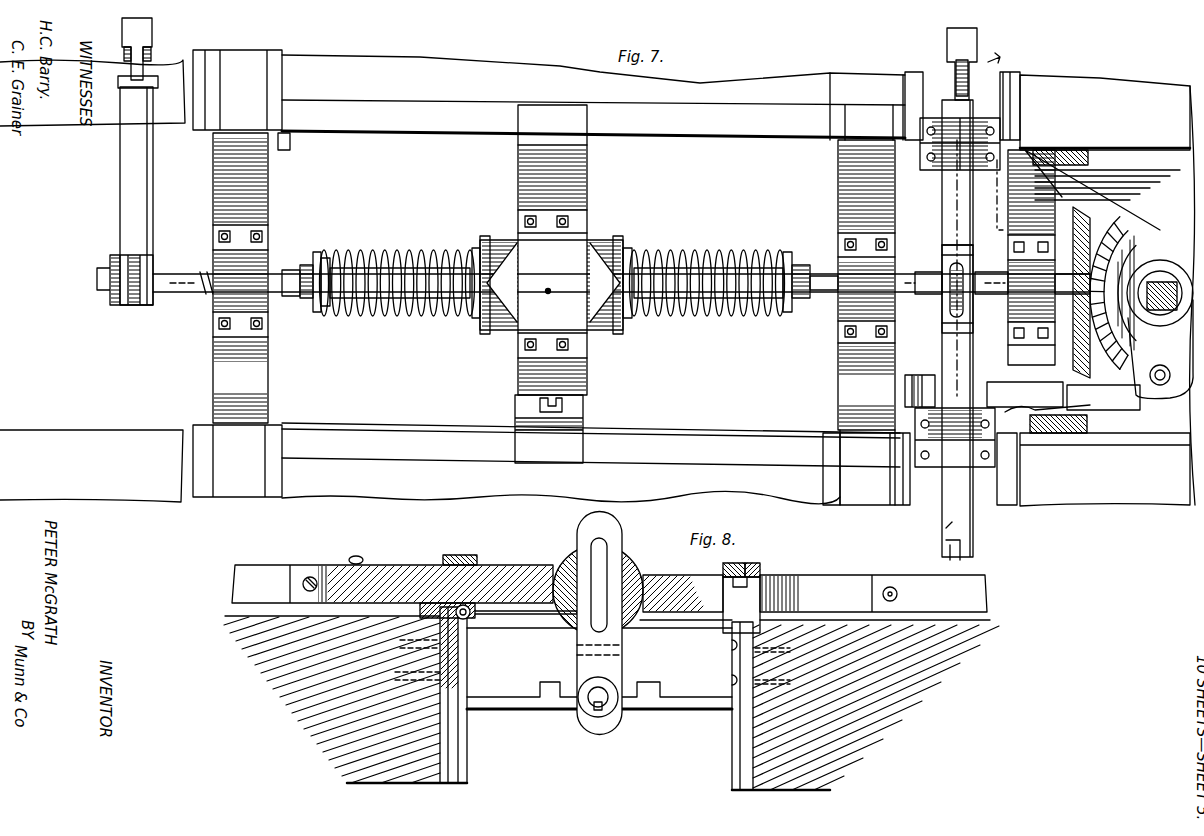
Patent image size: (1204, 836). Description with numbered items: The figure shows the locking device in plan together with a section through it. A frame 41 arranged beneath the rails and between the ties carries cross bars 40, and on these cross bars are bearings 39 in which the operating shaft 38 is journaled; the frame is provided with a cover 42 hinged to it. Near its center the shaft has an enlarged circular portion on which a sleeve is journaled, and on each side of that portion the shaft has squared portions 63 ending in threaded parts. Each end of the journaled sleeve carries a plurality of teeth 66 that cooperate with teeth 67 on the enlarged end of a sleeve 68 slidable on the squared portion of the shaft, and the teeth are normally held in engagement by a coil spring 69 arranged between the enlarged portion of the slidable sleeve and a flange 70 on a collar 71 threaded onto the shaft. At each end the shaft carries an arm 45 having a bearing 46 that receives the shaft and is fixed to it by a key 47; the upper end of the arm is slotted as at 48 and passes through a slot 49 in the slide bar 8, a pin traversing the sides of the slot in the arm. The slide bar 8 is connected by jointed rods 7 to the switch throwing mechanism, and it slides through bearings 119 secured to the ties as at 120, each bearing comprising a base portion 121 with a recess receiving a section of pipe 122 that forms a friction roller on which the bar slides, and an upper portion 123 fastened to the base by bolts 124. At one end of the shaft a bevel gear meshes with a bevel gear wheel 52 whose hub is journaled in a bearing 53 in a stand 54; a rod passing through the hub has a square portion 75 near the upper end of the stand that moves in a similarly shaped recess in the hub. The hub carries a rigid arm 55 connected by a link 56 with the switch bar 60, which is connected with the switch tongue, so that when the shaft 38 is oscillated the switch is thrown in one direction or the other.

In FIG. 7, the jointed rods 7 is at (152, 33).
In FIG. 8, the jointed rods 7 is at (609, 588).
In FIG. 7, the slide bar 8 is at (155, 86).
In FIG. 8, the slide bar 8 is at (821, 598).
In FIG. 7, the frame 41 is at (470, 125).
In FIG. 7, the cross bars 40 is at (262, 376).
In FIG. 8, the cross bars 40 is at (668, 708).
In FIG. 7, the bearings 39 is at (621, 285).
In FIG. 7, the shaft 38 is at (292, 294).
In FIG. 8, the shaft 38 is at (597, 708).
In FIG. 7, the squared portions 63 is at (372, 300).
In FIG. 7, the teeth 66 is at (490, 328).
In FIG. 7, the teeth 67 is at (470, 312).
In FIG. 7, the sleeve 68 is at (452, 262).
In FIG. 7, the coil spring 69 is at (378, 262).
In FIG. 7, the flange 70 is at (318, 262).
In FIG. 7, the collar 71 is at (340, 262).
In FIG. 7, the bearings 119 is at (957, 292).
In FIG. 8, the bearings 119 is at (457, 562).
In FIG. 7, the stand 54 is at (1090, 145).
In FIG. 7, the square portion 75 is at (1112, 195).
In FIG. 7, the bearing 53 is at (1150, 240).
In FIG. 7, the arm 55 is at (1162, 365).
In FIG. 7, the bevel gear wheel 52 is at (1128, 368).
In FIG. 7, the link 56 is at (1026, 393).
In FIG. 7, the switch bar 60 is at (905, 392).
In FIG. 7, the arm 45 is at (948, 300).
In FIG. 8, the arm 45 is at (578, 648).
In FIG. 8, the upper portion 123 is at (455, 562).
In FIG. 8, the section of pipe 122 is at (470, 606).
In FIG. 8, the bolts 124 is at (772, 572).
In FIG. 8, the base portion 121 is at (485, 626).
In FIG. 8, the securing points 120 is at (460, 652).
In FIG. 8, the cover 42 is at (675, 625).
In FIG. 8, the slot 48 is at (590, 541).
In FIG. 8, the slot 49 is at (636, 562).
In FIG. 8, the key 47 is at (603, 706).
In FIG. 8, the bearing 46 is at (615, 712).